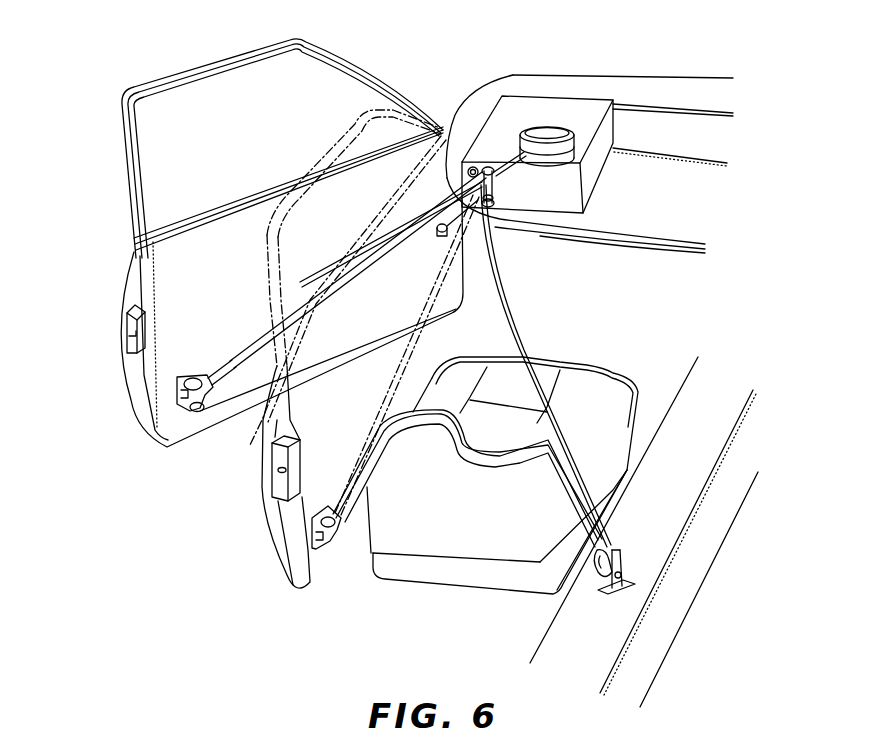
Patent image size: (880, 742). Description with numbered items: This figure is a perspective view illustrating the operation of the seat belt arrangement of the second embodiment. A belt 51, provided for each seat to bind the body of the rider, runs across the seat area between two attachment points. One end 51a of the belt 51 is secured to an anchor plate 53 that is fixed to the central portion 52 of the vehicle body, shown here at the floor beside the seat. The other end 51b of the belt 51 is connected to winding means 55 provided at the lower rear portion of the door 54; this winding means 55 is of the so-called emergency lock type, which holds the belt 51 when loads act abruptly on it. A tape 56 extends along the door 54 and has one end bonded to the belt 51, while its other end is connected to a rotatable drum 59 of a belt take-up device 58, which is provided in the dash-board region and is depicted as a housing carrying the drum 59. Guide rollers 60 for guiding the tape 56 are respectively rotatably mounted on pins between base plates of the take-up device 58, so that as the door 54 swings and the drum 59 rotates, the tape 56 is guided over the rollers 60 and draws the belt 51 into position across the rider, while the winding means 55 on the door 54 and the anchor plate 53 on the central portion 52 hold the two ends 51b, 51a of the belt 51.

The belt 51 is at (513, 307).
The one end of the belt 51a is at (603, 530).
The other end of the belt 51b is at (217, 384).
The central portion of the vehicle body 52 is at (568, 631).
The anchor plate 53 is at (598, 580).
The door 54 is at (133, 262).
The winding means 55 is at (187, 413).
The tape 56 is at (513, 167).
The belt take-up device 58 is at (543, 100).
The rotatable drum 59 is at (560, 127).
The guide rollers 60 is at (488, 167).